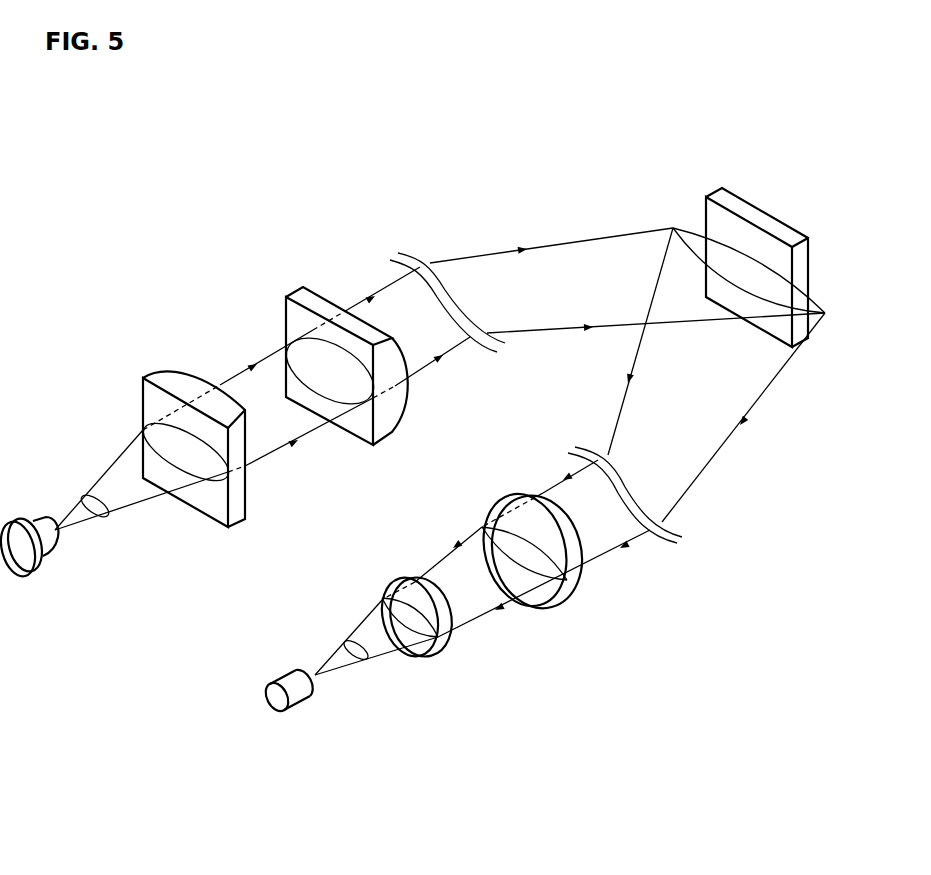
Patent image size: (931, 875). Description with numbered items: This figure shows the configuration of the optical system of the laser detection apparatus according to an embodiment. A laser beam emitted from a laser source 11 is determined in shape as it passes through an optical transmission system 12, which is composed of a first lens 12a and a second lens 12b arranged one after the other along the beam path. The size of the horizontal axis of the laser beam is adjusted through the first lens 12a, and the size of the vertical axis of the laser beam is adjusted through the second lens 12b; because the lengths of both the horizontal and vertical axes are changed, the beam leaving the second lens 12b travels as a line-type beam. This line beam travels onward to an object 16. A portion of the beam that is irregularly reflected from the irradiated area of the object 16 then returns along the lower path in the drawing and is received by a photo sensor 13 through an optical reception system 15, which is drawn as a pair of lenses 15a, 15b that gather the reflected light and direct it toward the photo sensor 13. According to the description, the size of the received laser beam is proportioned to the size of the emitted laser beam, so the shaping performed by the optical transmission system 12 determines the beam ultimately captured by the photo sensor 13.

The laser source 11 is at (20, 558).
The optical transmission system 12 is at (270, 373).
The first lens 12a is at (182, 380).
The second lens 12b is at (300, 296).
The photo sensor 13 is at (275, 700).
The optical reception system 15 is at (484, 618).
The first condensing lens 15a is at (453, 637).
The second condensing lens 15b is at (550, 600).
The object 16 is at (762, 220).